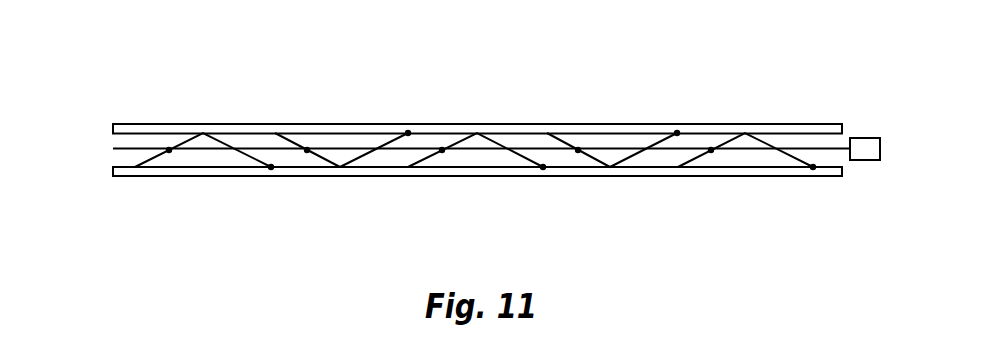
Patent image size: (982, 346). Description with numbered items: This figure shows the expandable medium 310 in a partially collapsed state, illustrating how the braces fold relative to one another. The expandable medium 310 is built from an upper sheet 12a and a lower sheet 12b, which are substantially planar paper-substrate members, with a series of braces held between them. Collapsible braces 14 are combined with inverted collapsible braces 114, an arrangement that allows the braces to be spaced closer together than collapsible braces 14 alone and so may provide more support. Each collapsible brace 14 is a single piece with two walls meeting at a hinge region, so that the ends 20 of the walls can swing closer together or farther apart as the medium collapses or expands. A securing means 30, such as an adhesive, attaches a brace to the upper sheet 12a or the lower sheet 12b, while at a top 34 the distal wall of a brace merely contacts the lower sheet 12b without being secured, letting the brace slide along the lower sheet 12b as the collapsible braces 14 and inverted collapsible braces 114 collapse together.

The expandable medium 310 is at (190, 64).
The upper sheet 12a is at (113, 129).
The lower sheet 12b is at (113, 172).
The collapsible brace 14 is at (183, 143).
The ends of the walls 20 is at (133, 177).
The inverted collapsible brace 114 is at (318, 157).
The top 34 is at (417, 177).
The securing means 30 is at (542, 171).